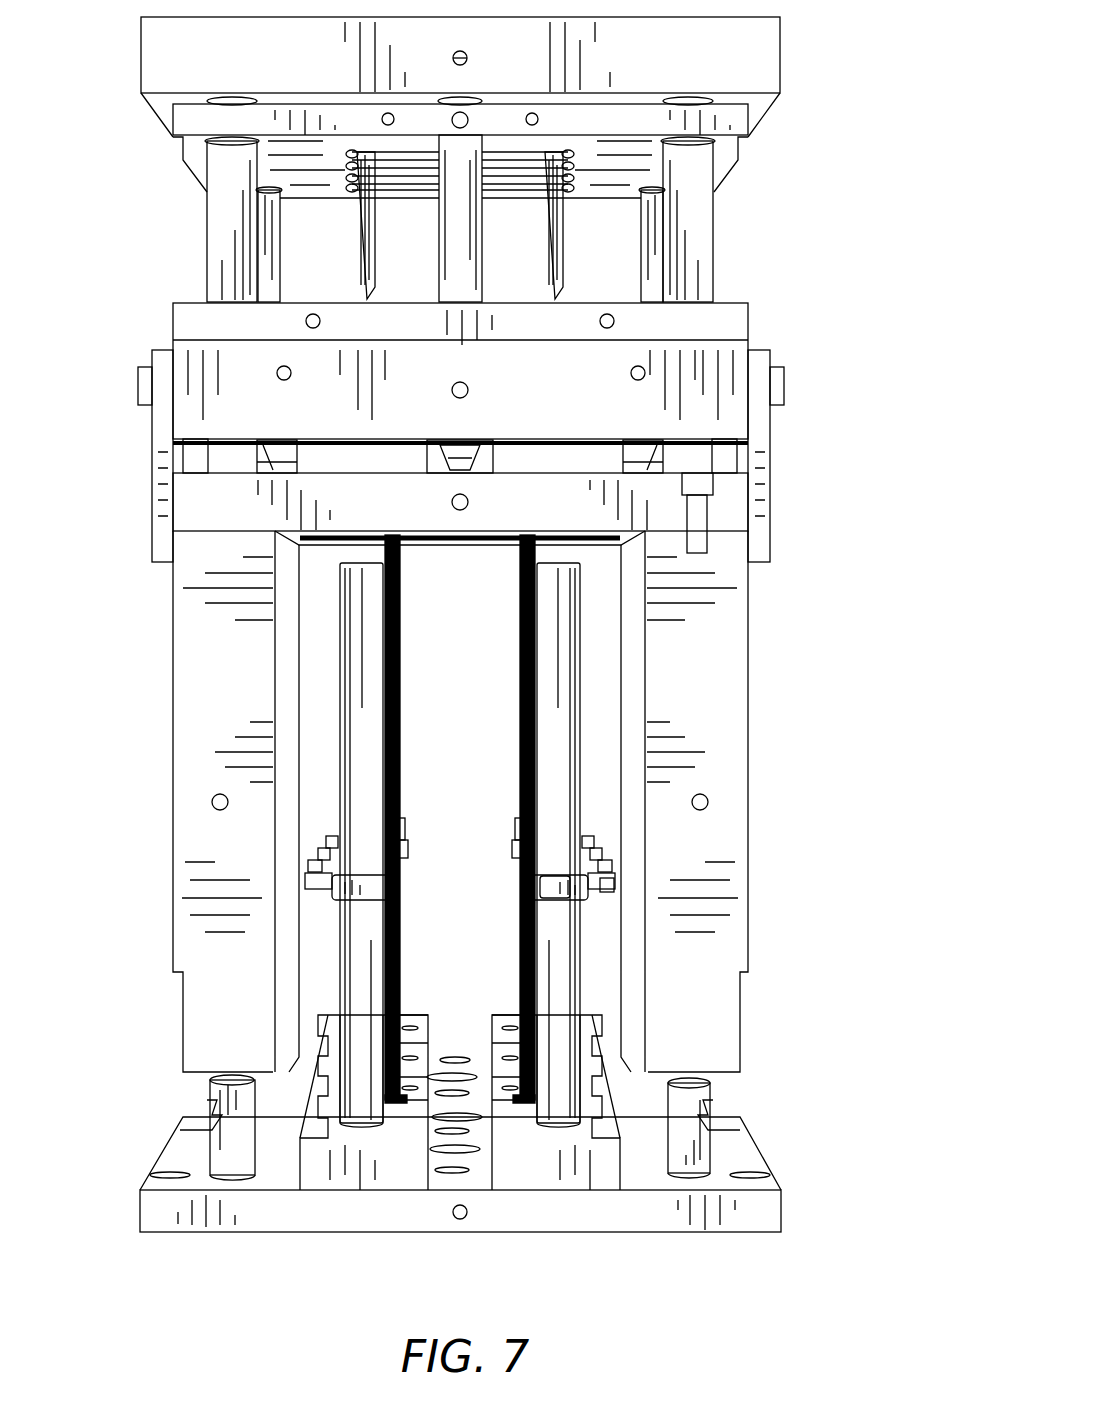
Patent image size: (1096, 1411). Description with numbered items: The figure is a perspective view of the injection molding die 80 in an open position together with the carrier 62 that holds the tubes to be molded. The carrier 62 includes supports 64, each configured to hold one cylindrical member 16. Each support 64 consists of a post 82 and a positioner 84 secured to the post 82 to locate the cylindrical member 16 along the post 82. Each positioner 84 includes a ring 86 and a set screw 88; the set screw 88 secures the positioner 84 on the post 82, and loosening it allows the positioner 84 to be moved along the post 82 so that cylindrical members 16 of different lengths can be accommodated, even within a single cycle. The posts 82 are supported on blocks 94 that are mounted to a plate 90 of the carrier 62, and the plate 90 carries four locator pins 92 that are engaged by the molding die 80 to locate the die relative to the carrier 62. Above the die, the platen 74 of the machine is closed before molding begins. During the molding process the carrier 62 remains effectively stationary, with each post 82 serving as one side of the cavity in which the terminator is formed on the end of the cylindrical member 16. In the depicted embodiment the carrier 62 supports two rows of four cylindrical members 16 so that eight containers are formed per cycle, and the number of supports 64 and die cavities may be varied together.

The platen 74 is at (786, 50).
The molding die 80 is at (813, 506).
The cylindrical member 16 is at (363, 753).
The post 82 is at (365, 943).
The positioner 84 is at (340, 895).
The ring 86 is at (553, 888).
The set screw 88 is at (612, 888).
The carrier 62 is at (473, 1164).
The plate 90 is at (735, 1218).
The locator pin 92 is at (242, 1075).
The block 94 is at (400, 1170).
The support 64 is at (355, 1060).